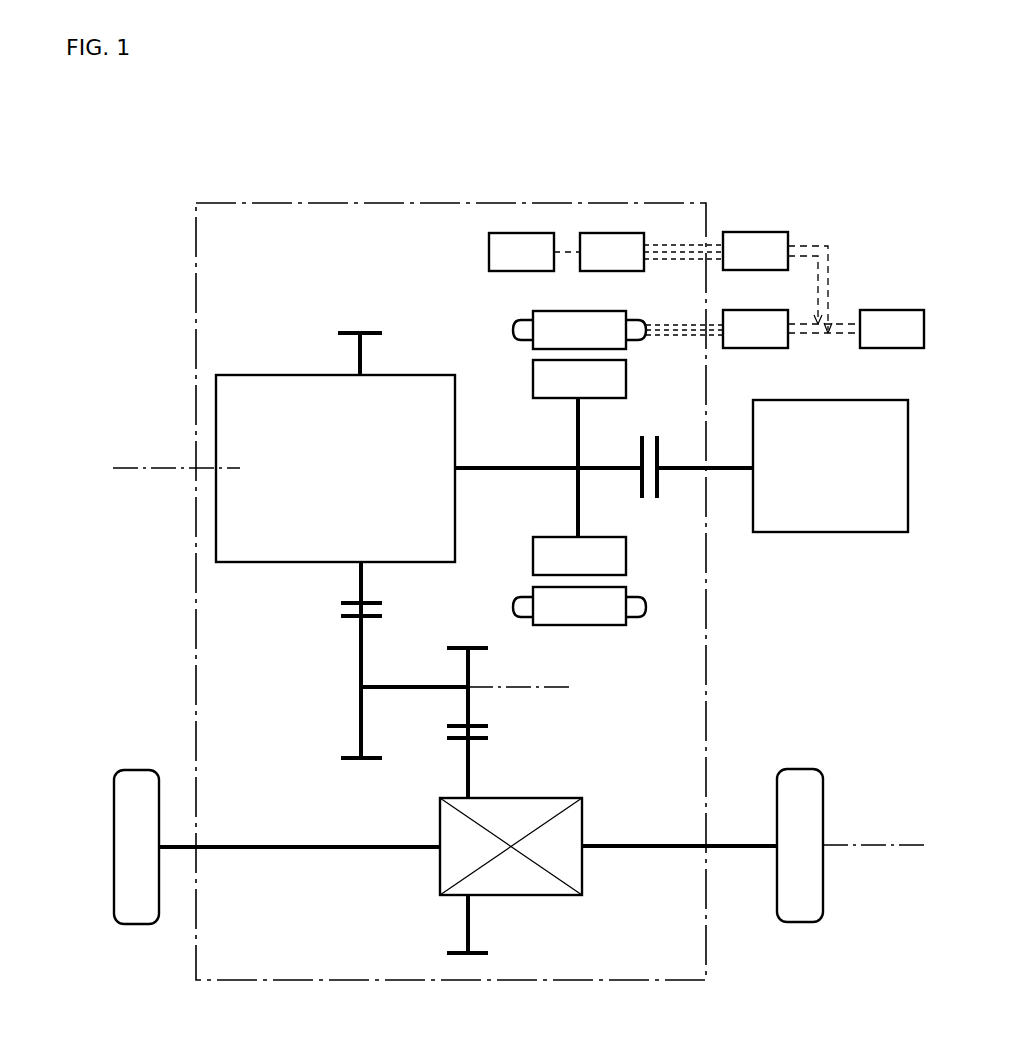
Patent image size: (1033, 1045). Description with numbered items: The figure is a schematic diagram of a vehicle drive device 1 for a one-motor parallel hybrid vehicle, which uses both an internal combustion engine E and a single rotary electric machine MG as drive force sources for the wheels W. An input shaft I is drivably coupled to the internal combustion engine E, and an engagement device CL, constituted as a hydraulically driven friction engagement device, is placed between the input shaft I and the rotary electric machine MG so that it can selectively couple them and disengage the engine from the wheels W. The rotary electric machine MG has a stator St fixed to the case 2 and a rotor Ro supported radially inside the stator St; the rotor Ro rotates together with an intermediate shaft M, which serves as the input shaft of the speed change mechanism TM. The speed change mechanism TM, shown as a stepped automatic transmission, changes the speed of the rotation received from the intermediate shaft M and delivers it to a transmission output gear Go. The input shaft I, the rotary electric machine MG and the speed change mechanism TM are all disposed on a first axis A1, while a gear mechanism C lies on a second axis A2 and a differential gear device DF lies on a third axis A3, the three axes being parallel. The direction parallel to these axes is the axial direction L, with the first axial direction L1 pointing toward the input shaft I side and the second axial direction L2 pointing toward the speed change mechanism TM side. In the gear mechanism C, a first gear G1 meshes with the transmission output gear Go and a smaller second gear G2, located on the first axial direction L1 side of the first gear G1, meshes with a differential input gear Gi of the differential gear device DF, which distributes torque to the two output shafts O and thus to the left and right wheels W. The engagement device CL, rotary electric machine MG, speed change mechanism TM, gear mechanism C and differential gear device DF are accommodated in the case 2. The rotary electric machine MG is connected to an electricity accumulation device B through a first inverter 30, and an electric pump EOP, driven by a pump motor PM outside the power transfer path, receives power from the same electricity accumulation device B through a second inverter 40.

The vehicle drive device 1 is at (228, 152).
The case 2 is at (355, 203).
The first inverter 30 is at (758, 348).
The second inverter 40 is at (755, 232).
The rotary electric machine MG is at (530, 395).
The stator St is at (579, 468).
The rotor Ro is at (579, 467).
The electric pump EOP is at (534, 252).
The pump motor PM is at (651, 252).
The electricity accumulation device B is at (887, 310).
The speed change mechanism TM is at (254, 375).
The transmission output gear Go is at (370, 332).
The first axis A1 is at (143, 466).
The second axis A2 is at (552, 688).
The third axis A3 is at (877, 848).
The intermediate shaft M is at (468, 464).
The input shaft I is at (714, 464).
The engagement device CL is at (654, 432).
The internal combustion engine E is at (832, 534).
The gear mechanism C is at (332, 660).
The first gear G1 is at (352, 762).
The second gear G2 is at (452, 644).
The differential input gear Gi is at (483, 742).
The differential gear device DF is at (528, 897).
The output shafts O is at (245, 840).
The wheels W is at (140, 778).
The axial direction L is at (629, 111).
The first axial direction L1 is at (659, 105).
The second axial direction L2 is at (529, 105).